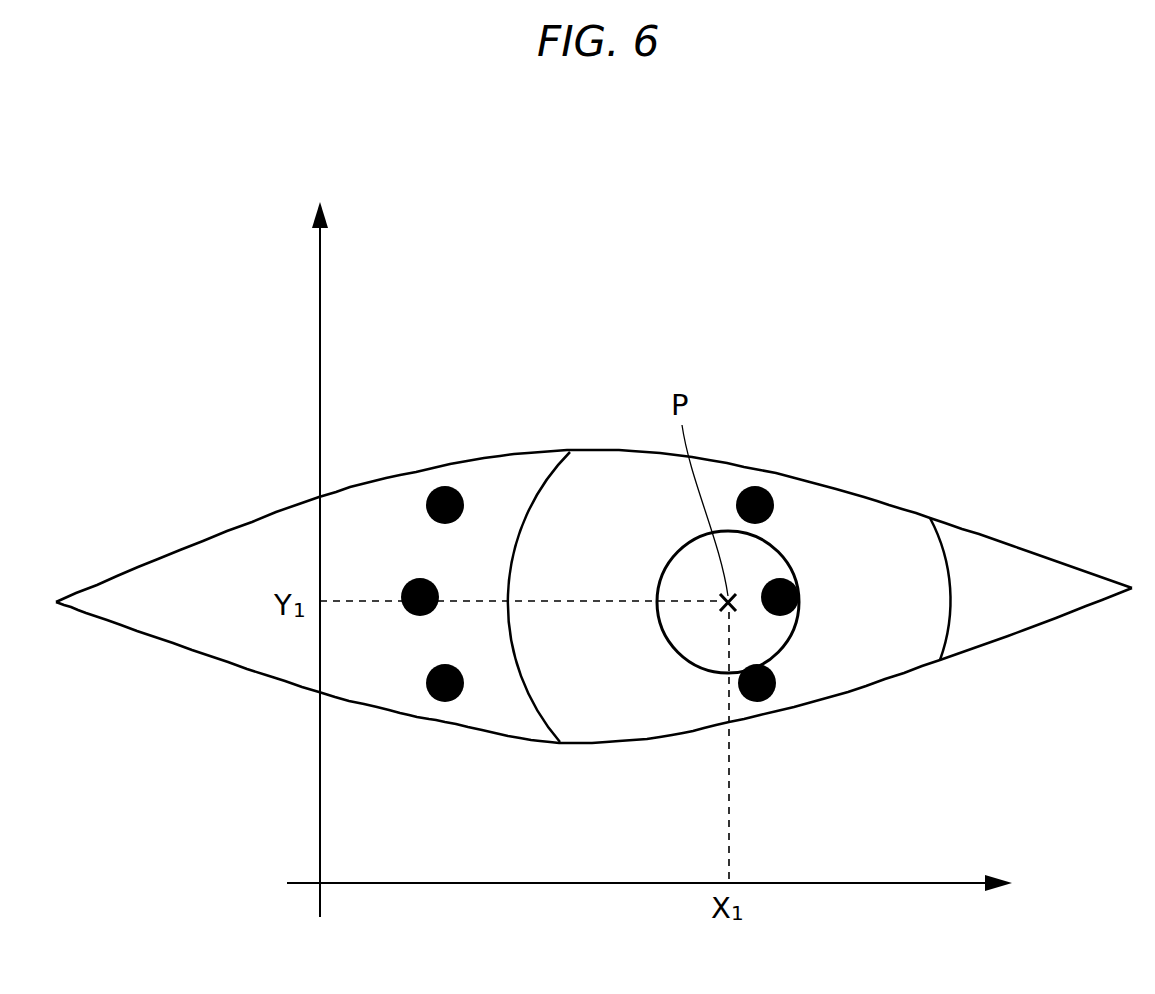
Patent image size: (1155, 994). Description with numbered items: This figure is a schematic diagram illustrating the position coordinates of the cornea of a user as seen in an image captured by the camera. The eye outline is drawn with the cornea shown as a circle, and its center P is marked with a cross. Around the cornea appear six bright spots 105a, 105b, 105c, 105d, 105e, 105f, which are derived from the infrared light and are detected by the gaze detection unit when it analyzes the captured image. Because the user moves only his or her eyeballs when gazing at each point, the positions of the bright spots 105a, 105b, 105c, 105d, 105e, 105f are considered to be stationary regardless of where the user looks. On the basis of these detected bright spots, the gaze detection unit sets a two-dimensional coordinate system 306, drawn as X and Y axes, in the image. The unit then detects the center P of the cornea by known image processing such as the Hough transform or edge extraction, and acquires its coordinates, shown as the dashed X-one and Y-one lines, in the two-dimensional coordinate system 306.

The two-dimensional coordinate system 306 is at (320, 325).
The bright spot 105a is at (438, 488).
The bright spot 105b is at (438, 592).
The bright spot 105c is at (447, 702).
The bright spot 105d is at (793, 443).
The bright spot 105e is at (798, 595).
The bright spot 105f is at (763, 702).